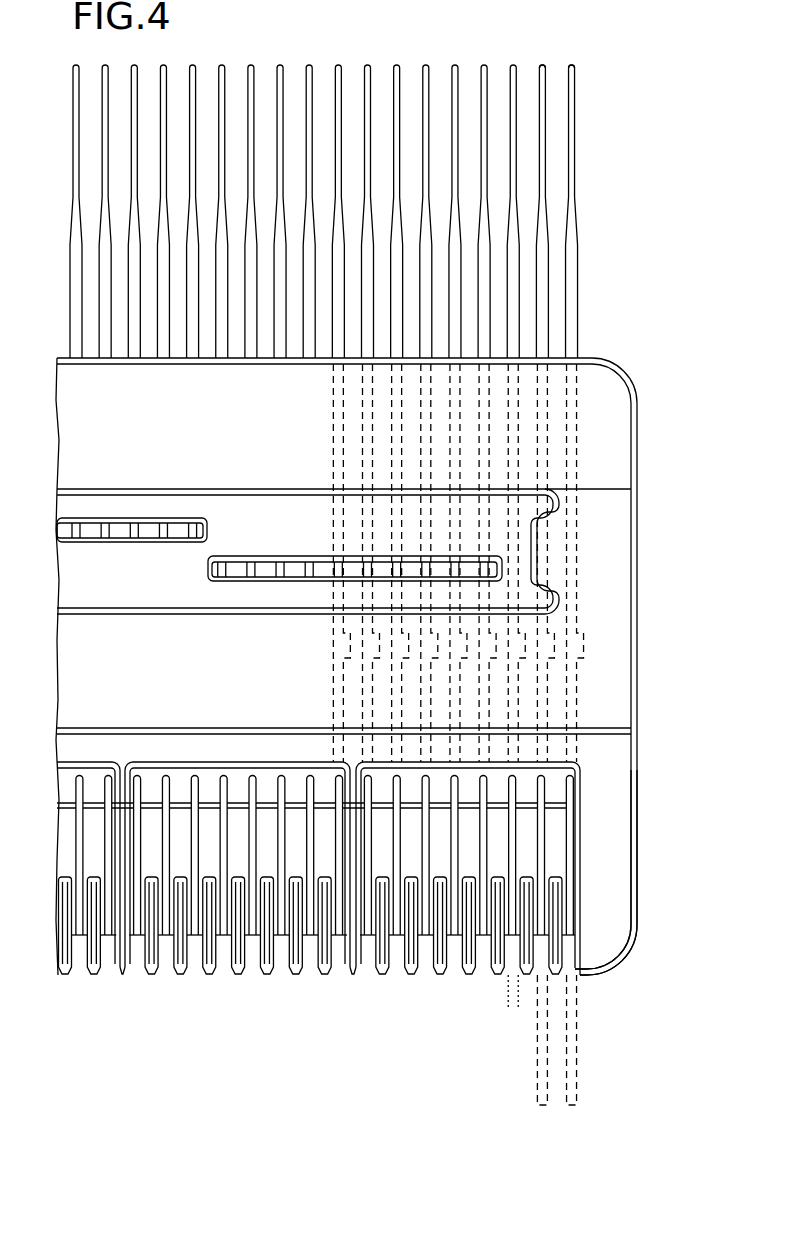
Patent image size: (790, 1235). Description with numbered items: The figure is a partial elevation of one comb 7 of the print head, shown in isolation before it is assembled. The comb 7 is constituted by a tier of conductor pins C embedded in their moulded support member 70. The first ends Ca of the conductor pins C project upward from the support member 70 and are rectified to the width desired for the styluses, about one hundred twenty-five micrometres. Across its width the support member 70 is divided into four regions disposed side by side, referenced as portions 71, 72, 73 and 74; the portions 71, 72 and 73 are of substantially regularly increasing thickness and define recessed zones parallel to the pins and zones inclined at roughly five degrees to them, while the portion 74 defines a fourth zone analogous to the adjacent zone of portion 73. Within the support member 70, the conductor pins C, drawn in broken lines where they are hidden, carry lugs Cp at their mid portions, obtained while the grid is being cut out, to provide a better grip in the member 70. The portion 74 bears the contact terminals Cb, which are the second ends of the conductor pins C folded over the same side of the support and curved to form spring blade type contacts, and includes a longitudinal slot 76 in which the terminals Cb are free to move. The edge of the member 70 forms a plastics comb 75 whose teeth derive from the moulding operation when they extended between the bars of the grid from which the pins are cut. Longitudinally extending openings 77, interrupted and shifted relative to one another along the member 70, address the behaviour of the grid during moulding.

The comb 7 is at (596, 310).
The support member 70 is at (635, 380).
The first region of the support 71 is at (123, 422).
The second region of the support 72 is at (120, 568).
The third region of the support 73 is at (120, 682).
The fourth region of the support 74 is at (512, 872).
The plastics comb 75 is at (440, 977).
The longitudinal slot 76 is at (555, 835).
The longitudinally extending openings 77 is at (180, 535).
The conductor pins C is at (548, 238).
The first ends of the conductor pins Ca is at (541, 66).
The lugs Cp is at (586, 650).
The contact terminals Cb is at (106, 838).